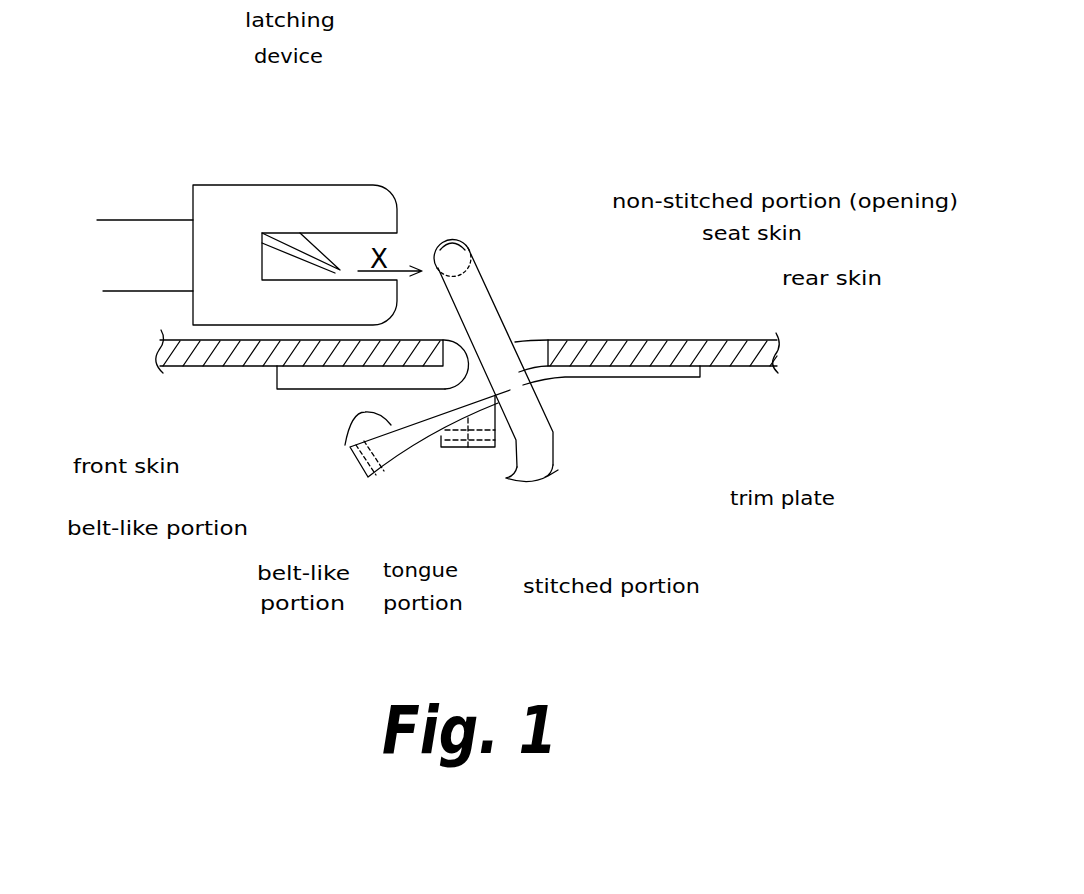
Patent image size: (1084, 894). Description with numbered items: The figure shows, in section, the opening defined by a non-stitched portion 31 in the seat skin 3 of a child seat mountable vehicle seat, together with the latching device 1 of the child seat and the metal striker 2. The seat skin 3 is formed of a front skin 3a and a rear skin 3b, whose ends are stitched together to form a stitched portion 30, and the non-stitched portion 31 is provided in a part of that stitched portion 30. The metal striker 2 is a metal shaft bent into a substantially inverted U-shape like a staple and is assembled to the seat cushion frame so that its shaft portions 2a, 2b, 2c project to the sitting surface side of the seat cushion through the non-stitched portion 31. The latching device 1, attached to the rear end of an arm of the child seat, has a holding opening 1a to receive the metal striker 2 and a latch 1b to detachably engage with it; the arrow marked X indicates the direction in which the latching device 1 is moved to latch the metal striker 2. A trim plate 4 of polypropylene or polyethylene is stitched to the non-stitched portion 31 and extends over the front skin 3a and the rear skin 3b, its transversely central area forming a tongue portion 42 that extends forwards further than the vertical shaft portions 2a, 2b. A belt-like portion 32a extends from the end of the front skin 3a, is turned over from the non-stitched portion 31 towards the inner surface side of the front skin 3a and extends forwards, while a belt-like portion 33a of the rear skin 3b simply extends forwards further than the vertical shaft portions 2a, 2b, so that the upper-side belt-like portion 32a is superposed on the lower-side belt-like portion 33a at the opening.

The latching device 1 is at (275, 173).
The holding opening 1a is at (344, 241).
The latch 1b is at (280, 250).
The metal striker 2 is at (515, 244).
The shaft portion 2a is at (485, 282).
The shaft portion 2b is at (564, 305).
The shaft portion 2c is at (470, 243).
The seat skin 3 is at (625, 337).
The front skin 3a is at (178, 367).
The rear skin 3b is at (713, 340).
The trim plate 4 is at (660, 378).
The stitched portion 30 is at (473, 450).
The non-stitched portion 31 is at (517, 331).
The belt-like portion 32a is at (307, 392).
The belt-like portion 33a is at (345, 445).
The tongue portion 42 is at (398, 460).